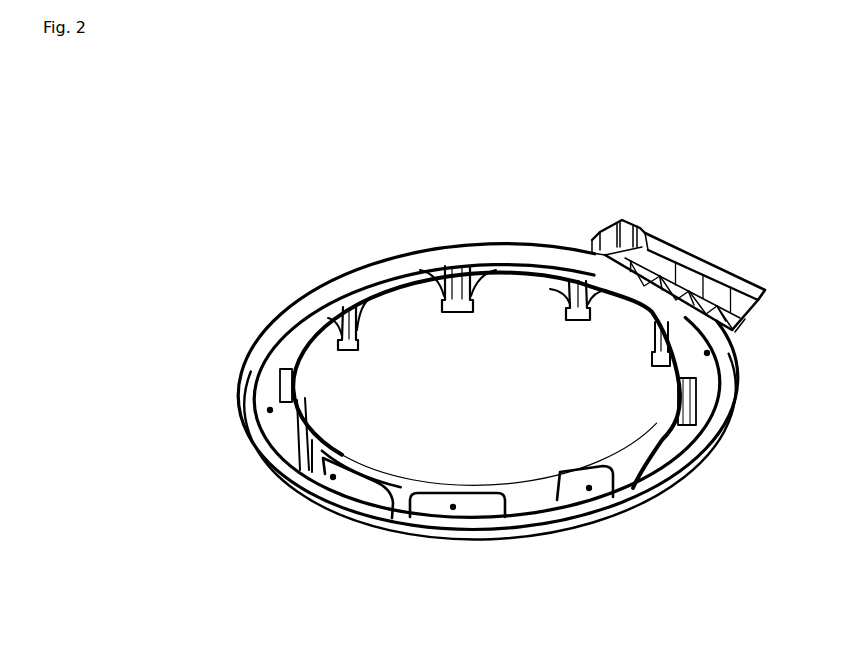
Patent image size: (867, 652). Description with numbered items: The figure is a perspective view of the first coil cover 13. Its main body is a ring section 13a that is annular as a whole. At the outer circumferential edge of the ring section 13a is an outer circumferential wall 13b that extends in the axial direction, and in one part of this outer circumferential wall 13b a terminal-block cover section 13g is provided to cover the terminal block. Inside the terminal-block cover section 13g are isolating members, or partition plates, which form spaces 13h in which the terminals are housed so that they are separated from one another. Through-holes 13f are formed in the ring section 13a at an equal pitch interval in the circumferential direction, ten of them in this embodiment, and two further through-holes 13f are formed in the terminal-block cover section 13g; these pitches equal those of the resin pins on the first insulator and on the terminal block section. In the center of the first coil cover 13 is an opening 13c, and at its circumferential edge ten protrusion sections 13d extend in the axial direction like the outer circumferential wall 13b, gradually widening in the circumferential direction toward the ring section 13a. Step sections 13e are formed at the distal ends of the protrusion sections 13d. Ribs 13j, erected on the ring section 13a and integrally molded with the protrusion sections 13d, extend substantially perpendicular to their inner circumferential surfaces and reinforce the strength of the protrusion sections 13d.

The first coil cover 13 is at (463, 238).
The ring section 13a is at (264, 377).
The outer circumferential wall 13b is at (313, 300).
The opening 13c is at (547, 452).
The protrusion sections 13d is at (400, 505).
The step sections 13e is at (457, 313).
The through-holes 13f is at (270, 413).
The terminal-block cover section 13g is at (704, 246).
The spaces 13h is at (687, 282).
The ribs 13j is at (341, 306).